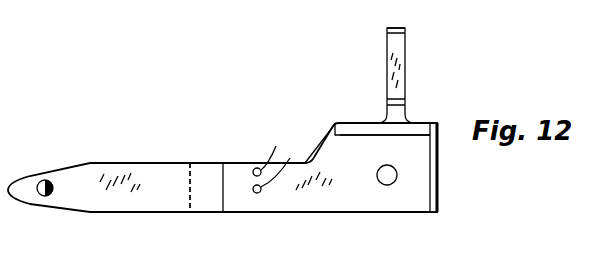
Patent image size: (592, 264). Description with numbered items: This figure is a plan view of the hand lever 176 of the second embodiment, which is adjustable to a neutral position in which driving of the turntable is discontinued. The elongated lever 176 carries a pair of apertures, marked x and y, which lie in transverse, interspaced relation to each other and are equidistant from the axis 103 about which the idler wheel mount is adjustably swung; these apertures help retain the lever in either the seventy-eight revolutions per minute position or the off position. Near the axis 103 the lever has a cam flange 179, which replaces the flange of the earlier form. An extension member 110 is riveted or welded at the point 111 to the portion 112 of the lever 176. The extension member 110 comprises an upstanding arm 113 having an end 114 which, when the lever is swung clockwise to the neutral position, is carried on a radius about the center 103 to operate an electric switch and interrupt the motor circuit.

The hand lever 176 is at (162, 168).
The portion of the lever 112 is at (330, 142).
The extension member 110 is at (374, 124).
The point 111 is at (385, 137).
The arm 113 is at (400, 70).
The end 114 is at (402, 29).
The axis 103 is at (388, 180).
The cam flange 179 is at (438, 190).